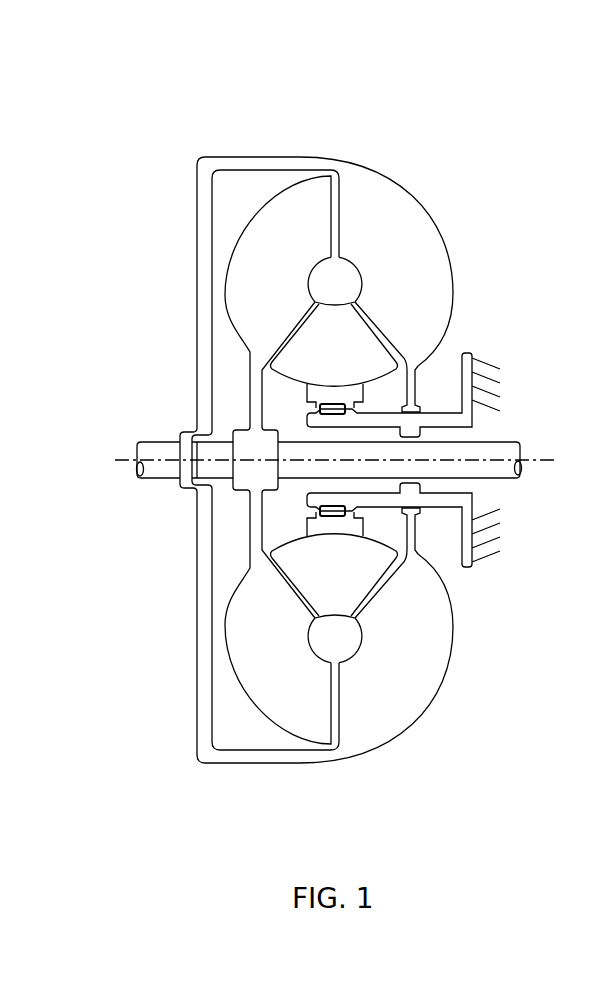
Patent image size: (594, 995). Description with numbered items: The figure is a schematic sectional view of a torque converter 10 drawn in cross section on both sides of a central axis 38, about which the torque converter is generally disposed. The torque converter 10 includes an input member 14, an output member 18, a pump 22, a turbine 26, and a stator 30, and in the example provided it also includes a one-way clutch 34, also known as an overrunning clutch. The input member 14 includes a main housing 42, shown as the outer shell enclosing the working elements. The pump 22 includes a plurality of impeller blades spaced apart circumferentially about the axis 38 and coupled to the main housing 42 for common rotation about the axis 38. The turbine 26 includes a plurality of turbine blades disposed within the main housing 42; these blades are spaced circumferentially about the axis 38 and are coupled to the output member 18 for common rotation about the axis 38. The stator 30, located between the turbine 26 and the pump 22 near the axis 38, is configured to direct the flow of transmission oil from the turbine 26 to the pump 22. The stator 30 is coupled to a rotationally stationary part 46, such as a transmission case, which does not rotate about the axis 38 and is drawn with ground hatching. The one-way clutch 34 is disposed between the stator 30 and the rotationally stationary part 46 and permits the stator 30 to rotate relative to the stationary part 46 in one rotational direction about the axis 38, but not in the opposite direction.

The torque converter 10 is at (180, 97).
The input member 14 is at (163, 442).
The output member 18 is at (500, 441).
The pump 22 is at (370, 203).
The turbine 26 is at (253, 276).
The stator 30 is at (308, 343).
The one-way clutch 34 is at (332, 407).
The central axis 38 is at (528, 466).
The main housing 42 is at (278, 156).
The rotationally stationary part 46 is at (463, 568).